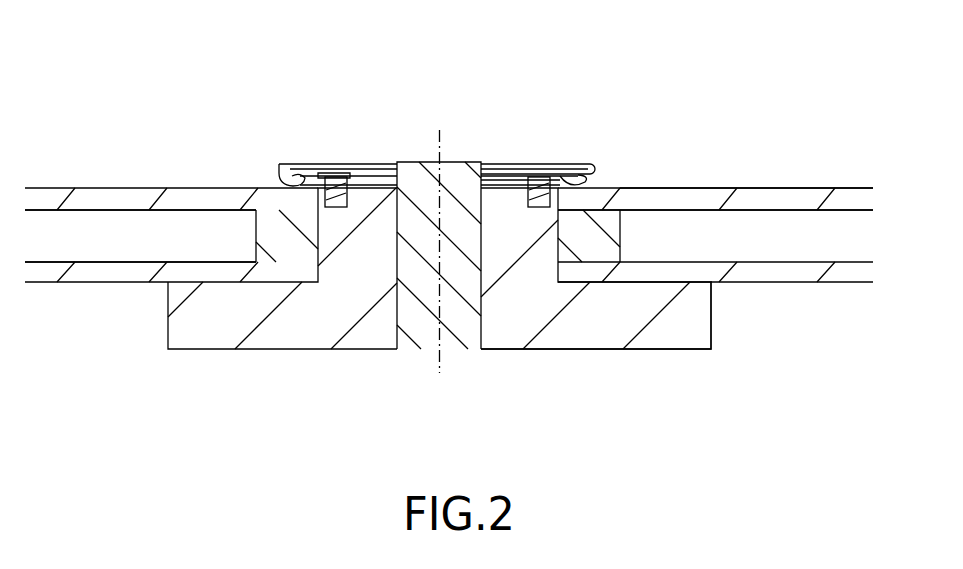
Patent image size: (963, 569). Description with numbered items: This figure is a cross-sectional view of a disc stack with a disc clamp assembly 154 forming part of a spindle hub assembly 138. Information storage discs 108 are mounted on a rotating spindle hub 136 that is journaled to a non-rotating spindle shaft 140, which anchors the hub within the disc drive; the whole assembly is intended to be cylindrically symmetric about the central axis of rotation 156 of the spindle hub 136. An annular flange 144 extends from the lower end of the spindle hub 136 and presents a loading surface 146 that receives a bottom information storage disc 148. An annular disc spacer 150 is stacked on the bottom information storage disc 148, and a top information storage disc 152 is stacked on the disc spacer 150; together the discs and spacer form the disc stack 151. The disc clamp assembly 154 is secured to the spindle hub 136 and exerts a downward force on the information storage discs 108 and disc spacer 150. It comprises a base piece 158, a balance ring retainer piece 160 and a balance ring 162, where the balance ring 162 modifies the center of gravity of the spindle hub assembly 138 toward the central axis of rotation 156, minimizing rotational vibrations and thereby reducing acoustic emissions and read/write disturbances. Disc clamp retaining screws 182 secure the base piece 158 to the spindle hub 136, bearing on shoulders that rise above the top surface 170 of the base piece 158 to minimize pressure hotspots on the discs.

The spindle hub assembly 138 is at (217, 94).
The information storage disc 108 is at (693, 183).
The top information storage disc 152 is at (778, 197).
The bottom information storage disc 148 is at (768, 270).
The disc stack 151 is at (52, 240).
The spindle hub 136 is at (287, 333).
The spindle shaft 140 is at (440, 332).
The central axis of rotation 156 is at (443, 152).
The annular flange 144 is at (705, 318).
The loading surface 146 is at (637, 277).
The annular disc spacer 150 is at (605, 217).
The balance ring retainer piece 160 is at (325, 165).
The balance ring 162 is at (283, 162).
The base piece 158 is at (385, 172).
The disc clamp assembly 154 is at (566, 145).
The top surface 170 is at (495, 177).
The disc clamp retaining screw 182 is at (537, 177).